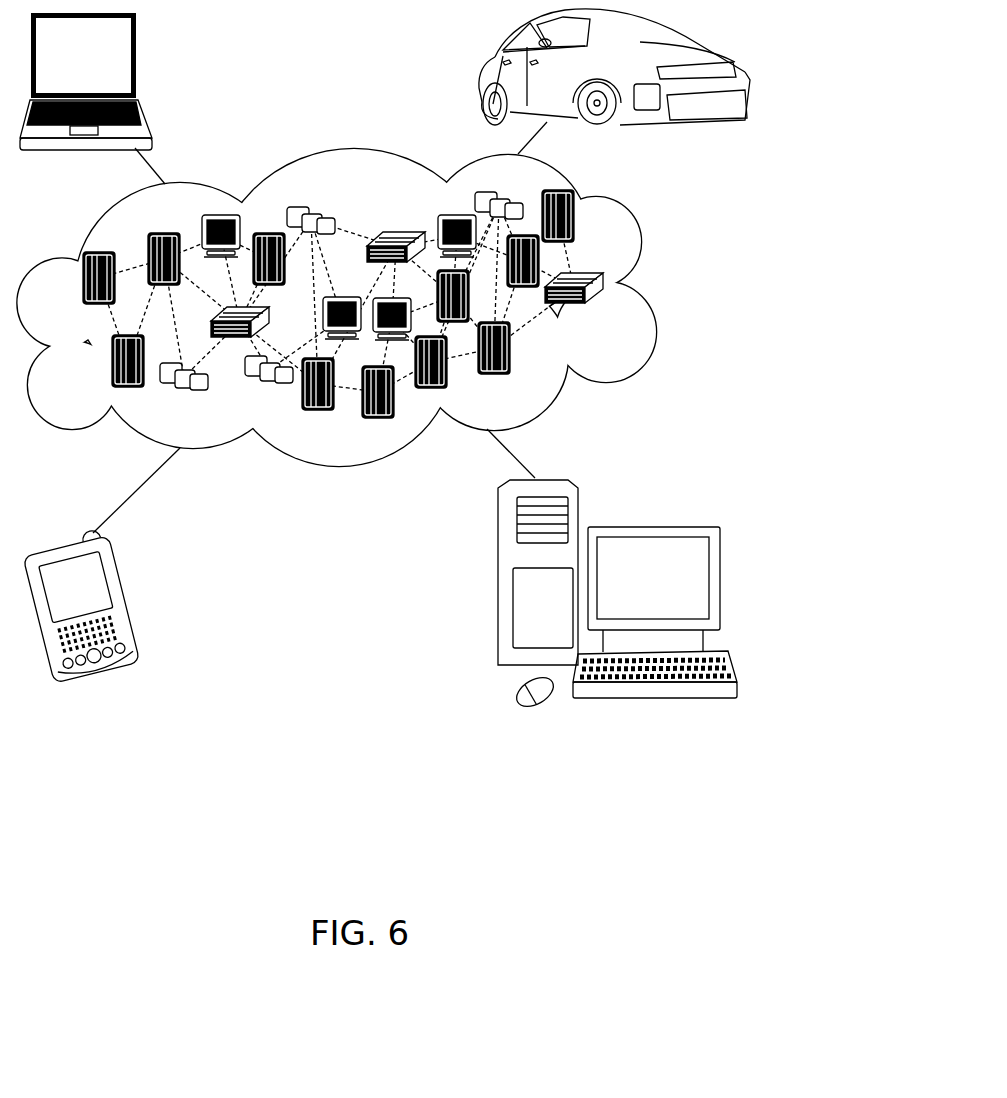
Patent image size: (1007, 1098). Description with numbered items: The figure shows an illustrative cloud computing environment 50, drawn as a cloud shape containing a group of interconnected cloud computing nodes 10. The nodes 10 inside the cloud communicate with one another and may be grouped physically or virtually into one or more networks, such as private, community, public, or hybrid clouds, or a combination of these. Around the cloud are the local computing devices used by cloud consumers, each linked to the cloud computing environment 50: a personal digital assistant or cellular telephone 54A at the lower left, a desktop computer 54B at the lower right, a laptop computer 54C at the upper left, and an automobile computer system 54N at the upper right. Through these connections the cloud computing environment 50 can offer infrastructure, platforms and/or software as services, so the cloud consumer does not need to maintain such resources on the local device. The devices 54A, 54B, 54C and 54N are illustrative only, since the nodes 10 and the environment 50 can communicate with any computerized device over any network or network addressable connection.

The cloud computing node 10 is at (352, 307).
The cloud computing environment 50 is at (636, 290).
The personal digital assistant or cellular telephone 54A is at (131, 603).
The desktop computer 54B is at (650, 527).
The laptop computer 54C is at (138, 63).
The automobile computer system 54N is at (478, 77).